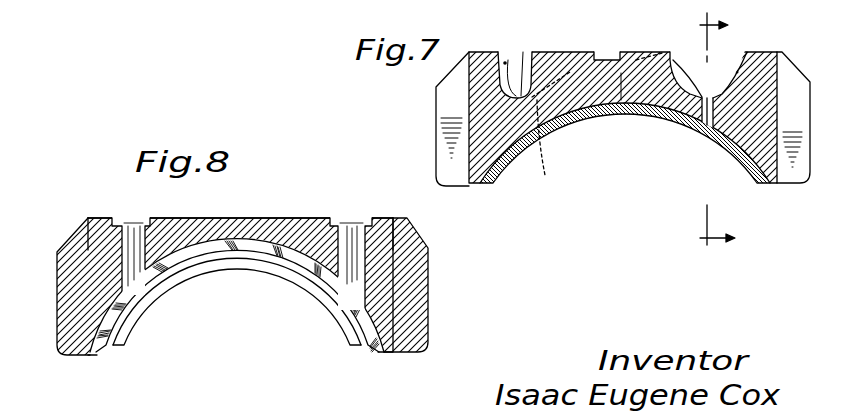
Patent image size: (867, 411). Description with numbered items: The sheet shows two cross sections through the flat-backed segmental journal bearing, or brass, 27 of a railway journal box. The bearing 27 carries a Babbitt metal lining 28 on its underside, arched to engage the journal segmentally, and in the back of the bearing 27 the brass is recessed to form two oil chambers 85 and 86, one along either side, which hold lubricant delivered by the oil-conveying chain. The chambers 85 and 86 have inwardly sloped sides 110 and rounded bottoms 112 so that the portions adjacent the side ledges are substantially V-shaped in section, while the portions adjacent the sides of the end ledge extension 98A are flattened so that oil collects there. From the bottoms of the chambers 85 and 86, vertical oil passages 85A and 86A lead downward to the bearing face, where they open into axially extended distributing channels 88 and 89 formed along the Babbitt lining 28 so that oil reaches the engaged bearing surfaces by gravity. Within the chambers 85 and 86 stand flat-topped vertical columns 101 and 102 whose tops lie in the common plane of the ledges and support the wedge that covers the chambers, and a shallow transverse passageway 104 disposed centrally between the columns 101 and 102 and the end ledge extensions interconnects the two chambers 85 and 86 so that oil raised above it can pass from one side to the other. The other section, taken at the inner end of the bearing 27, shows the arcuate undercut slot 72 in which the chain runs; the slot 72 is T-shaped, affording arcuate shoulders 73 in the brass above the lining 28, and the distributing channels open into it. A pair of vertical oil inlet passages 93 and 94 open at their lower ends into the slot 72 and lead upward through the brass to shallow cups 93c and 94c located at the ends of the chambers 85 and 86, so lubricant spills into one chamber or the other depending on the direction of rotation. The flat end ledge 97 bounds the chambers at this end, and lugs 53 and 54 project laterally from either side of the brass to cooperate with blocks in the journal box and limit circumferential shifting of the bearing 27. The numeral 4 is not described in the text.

In FIG. 8, the journal bearing 27 is at (270, 218).
In FIG. 8, the lining 28 is at (284, 272).
In FIG. 8, the undercut slot 72 is at (199, 243).
In FIG. 8, the arcuate shoulders 73 is at (209, 253).
In FIG. 8, the oil inlet passage 93 is at (357, 226).
In FIG. 8, the shallow cup 93c is at (343, 223).
In FIG. 8, the oil inlet passage 94 is at (126, 242).
In FIG. 8, the shallow cup 94c is at (125, 217).
In FIG. 8, the end ledge 97 is at (306, 218).
In FIG. 7, the lug 53 is at (793, 117).
In FIG. 8, the lug 53 is at (432, 338).
In FIG. 7, the lug 54 is at (452, 106).
In FIG. 8, the lug 54 is at (58, 325).
In FIG. 7, the vertical column 102 is at (543, 56).
In FIG. 7, the transverse passageway 104 is at (606, 52).
In FIG. 7, the inwardly sloped sides 110 is at (505, 62).
In FIG. 7, the oil chamber 86 is at (518, 96).
In FIG. 7, the rounded bottom 112 is at (522, 88).
In FIG. 7, the vertical oil passage 86A is at (555, 132).
In FIG. 7, the distributing channel 88 is at (558, 129).
In FIG. 7, the distributing channel 89 is at (692, 130).
In FIG. 7, the end ledge extension 98A is at (637, 52).
In FIG. 7, the vertical column 101 is at (685, 52).
In FIG. 7, the oil chamber 85 is at (750, 52).
In FIG. 7, the vertical oil passage 85A is at (704, 128).
In FIG. 7, the section line 4- 4 is at (717, 136).